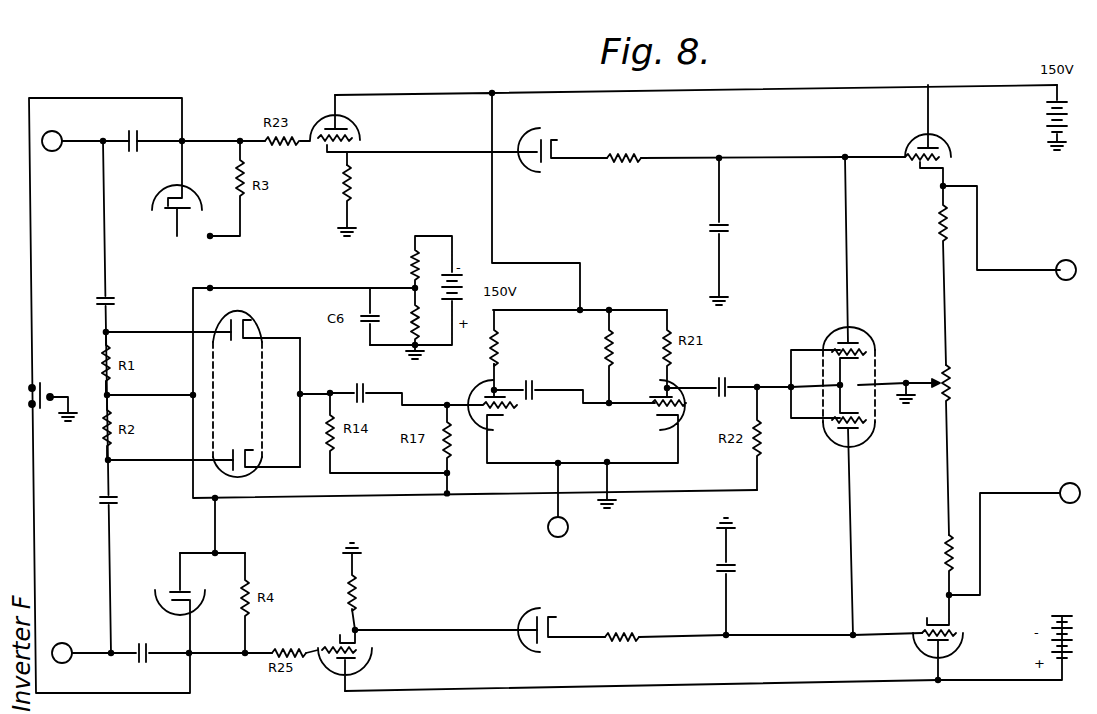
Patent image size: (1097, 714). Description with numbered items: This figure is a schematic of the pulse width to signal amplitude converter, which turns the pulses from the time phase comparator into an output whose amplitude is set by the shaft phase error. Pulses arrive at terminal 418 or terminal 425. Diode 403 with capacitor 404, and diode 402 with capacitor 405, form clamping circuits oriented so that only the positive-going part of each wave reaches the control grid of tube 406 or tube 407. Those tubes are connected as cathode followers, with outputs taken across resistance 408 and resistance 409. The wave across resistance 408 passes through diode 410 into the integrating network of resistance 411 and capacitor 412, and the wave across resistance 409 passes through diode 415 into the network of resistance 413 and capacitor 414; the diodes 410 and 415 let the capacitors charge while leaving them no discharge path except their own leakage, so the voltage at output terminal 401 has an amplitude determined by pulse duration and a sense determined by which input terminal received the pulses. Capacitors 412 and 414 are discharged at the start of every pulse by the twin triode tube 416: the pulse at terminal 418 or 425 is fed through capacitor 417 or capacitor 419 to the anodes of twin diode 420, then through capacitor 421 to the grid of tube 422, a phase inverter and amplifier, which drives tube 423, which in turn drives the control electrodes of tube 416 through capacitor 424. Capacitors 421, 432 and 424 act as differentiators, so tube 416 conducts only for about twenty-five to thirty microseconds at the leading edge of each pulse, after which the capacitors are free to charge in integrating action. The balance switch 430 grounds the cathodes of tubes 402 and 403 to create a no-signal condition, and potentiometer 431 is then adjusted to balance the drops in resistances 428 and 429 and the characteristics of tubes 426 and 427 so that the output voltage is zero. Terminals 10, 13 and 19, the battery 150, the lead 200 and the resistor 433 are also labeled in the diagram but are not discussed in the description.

The output terminal 401 is at (1070, 477).
The diode 402 is at (171, 588).
The diode 403 is at (169, 188).
The capacitor 404 is at (130, 143).
The capacitor 405 is at (138, 653).
The tube 406 is at (337, 130).
The tube 407 is at (347, 659).
The resistance 408 is at (339, 196).
The resistance 409 is at (345, 586).
The diode 410 is at (553, 145).
The resistance 411 is at (624, 162).
The capacitor 412 is at (710, 227).
The resistance 413 is at (622, 638).
The capacitor 414 is at (718, 576).
The diode 415 is at (536, 628).
The twin triode electron tube 416 is at (839, 384).
The capacitor 417 is at (100, 301).
The terminal 418 is at (52, 151).
The capacitor 419 is at (104, 500).
The twin diode 420 is at (249, 384).
The capacitor 421 is at (349, 393).
The tube 422 is at (570, 413).
The tube 423 is at (626, 356).
The capacitor 424 is at (722, 373).
The terminal 425 is at (60, 663).
The tube 426 is at (953, 146).
The tube 427 is at (963, 644).
The resistance 428 is at (922, 275).
The resistance 429 is at (931, 572).
The balance switch 430 is at (40, 416).
The potentiometer 431 is at (943, 450).
The capacitor 432 is at (530, 383).
The resistor R18 433 is at (543, 338).
The terminal 10 is at (1066, 270).
The terminal 13 is at (1070, 493).
The terminal 19 is at (558, 500).
The battery 150 volts 150 is at (1078, 637).
The output lead 200 is at (1066, 286).